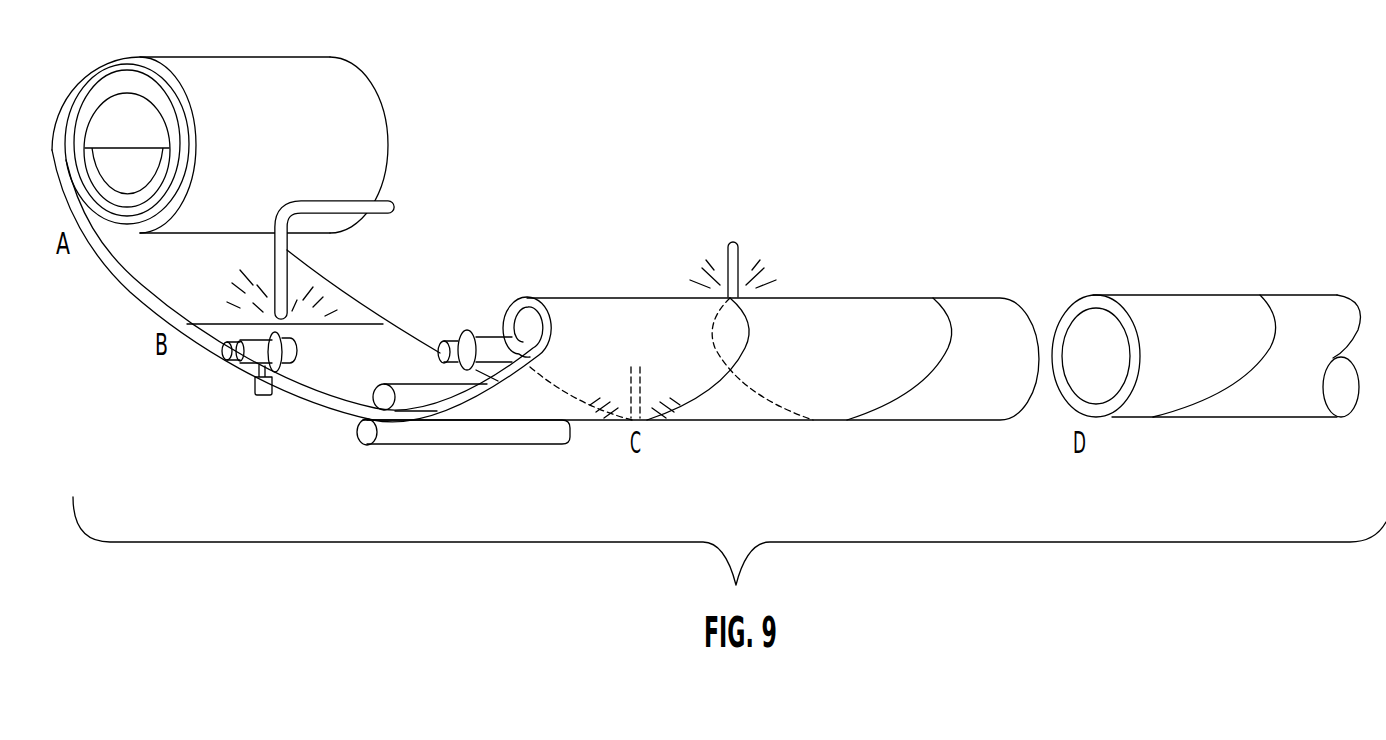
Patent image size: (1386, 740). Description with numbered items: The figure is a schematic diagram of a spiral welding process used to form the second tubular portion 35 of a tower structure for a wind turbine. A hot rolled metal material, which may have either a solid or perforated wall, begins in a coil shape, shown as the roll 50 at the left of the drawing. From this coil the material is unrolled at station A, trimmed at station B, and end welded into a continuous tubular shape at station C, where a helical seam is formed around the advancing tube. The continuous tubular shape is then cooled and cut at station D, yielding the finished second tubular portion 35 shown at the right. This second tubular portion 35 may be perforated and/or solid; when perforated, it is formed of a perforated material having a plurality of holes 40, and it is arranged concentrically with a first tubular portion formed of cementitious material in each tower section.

The roll of sheet material 50 is at (335, 115).
The holes 40 is at (1273, 393).
The second tubular portion 35 is at (1211, 328).